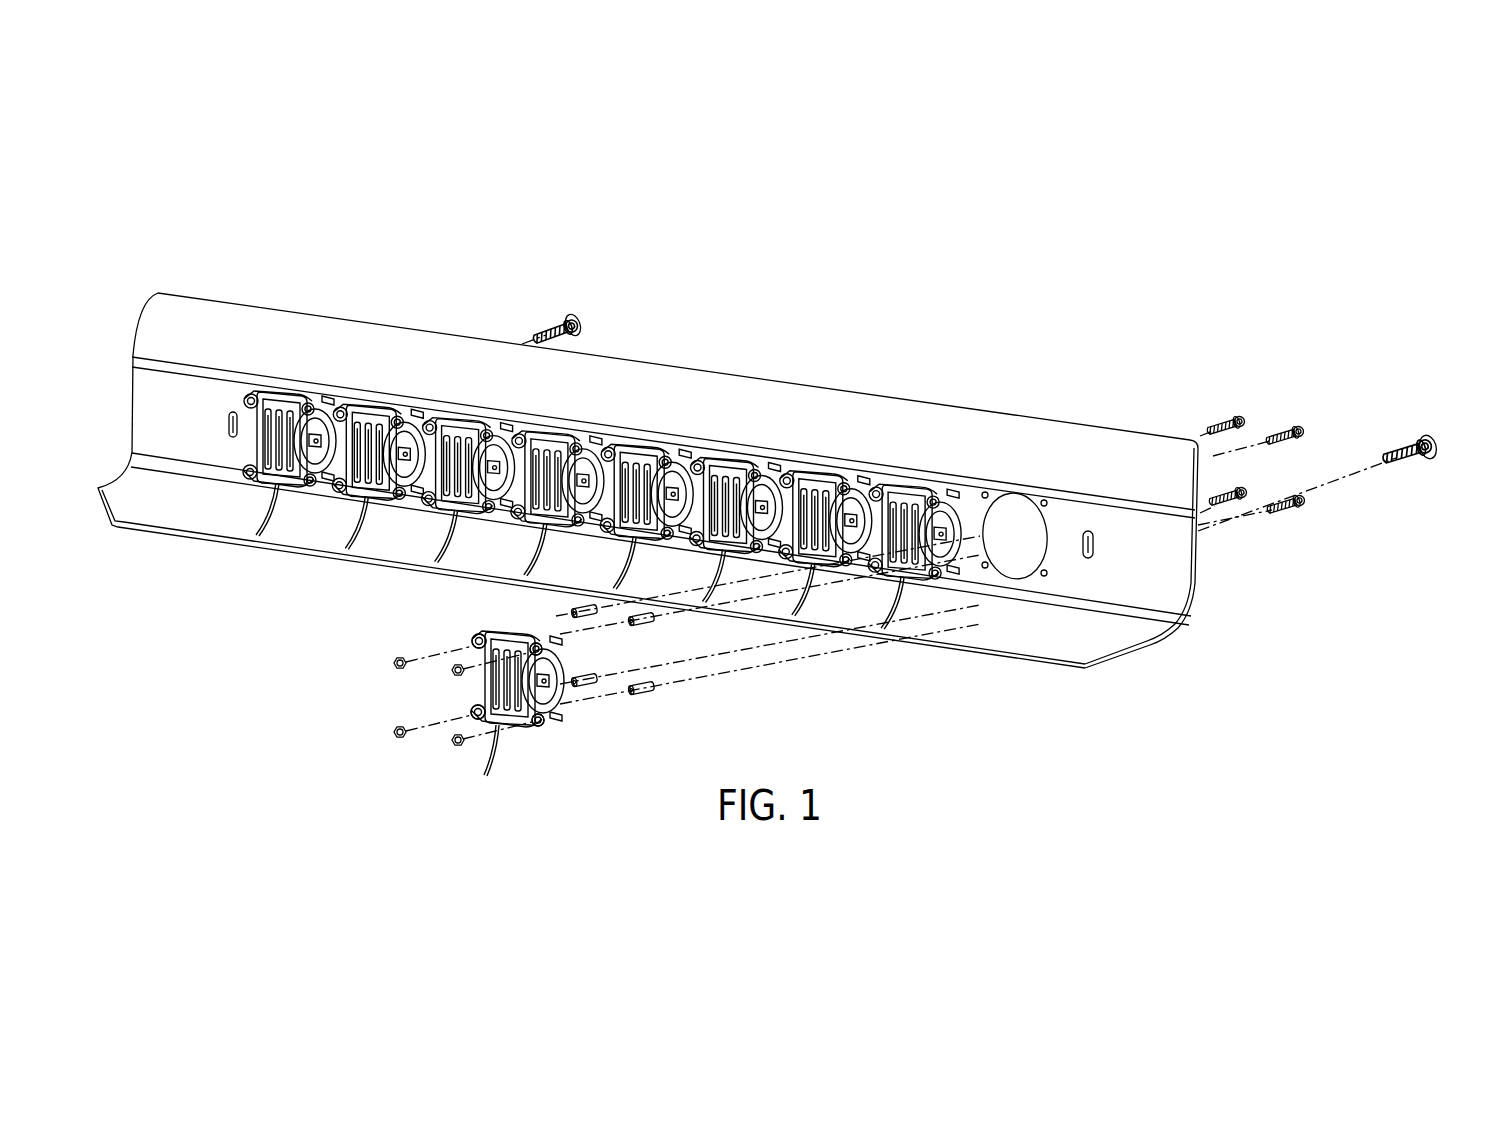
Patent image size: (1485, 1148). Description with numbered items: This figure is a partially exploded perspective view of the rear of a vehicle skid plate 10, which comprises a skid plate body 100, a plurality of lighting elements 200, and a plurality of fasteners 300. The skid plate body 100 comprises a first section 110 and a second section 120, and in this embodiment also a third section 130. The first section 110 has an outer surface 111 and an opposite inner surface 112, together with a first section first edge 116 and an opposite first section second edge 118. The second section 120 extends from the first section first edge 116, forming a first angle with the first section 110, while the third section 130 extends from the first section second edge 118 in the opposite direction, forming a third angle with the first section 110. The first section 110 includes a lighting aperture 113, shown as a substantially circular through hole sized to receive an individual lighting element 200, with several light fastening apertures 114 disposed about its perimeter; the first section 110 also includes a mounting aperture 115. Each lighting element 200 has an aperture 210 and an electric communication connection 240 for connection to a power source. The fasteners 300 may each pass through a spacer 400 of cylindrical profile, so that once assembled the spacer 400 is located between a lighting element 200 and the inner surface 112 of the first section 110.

The vehicle skid plate 10 is at (982, 250).
The skid plate body 100 is at (301, 311).
The first section 110 is at (1122, 561).
The outer surface 111 is at (1195, 550).
The inner surface 112 is at (1156, 592).
The lighting aperture 113 is at (1012, 498).
The light fastening aperture 114 is at (988, 492).
The mounting aperture 115 is at (228, 425).
The first section first edge 116 is at (136, 462).
The first section second edge 118 is at (134, 357).
The second section 120 is at (283, 531).
The third section 130 is at (724, 386).
The lighting element 200 is at (548, 688).
The aperture 210 is at (518, 640).
The electric communication connection 240 is at (503, 750).
The fastener 300 is at (580, 318).
The spacer 400 is at (640, 612).